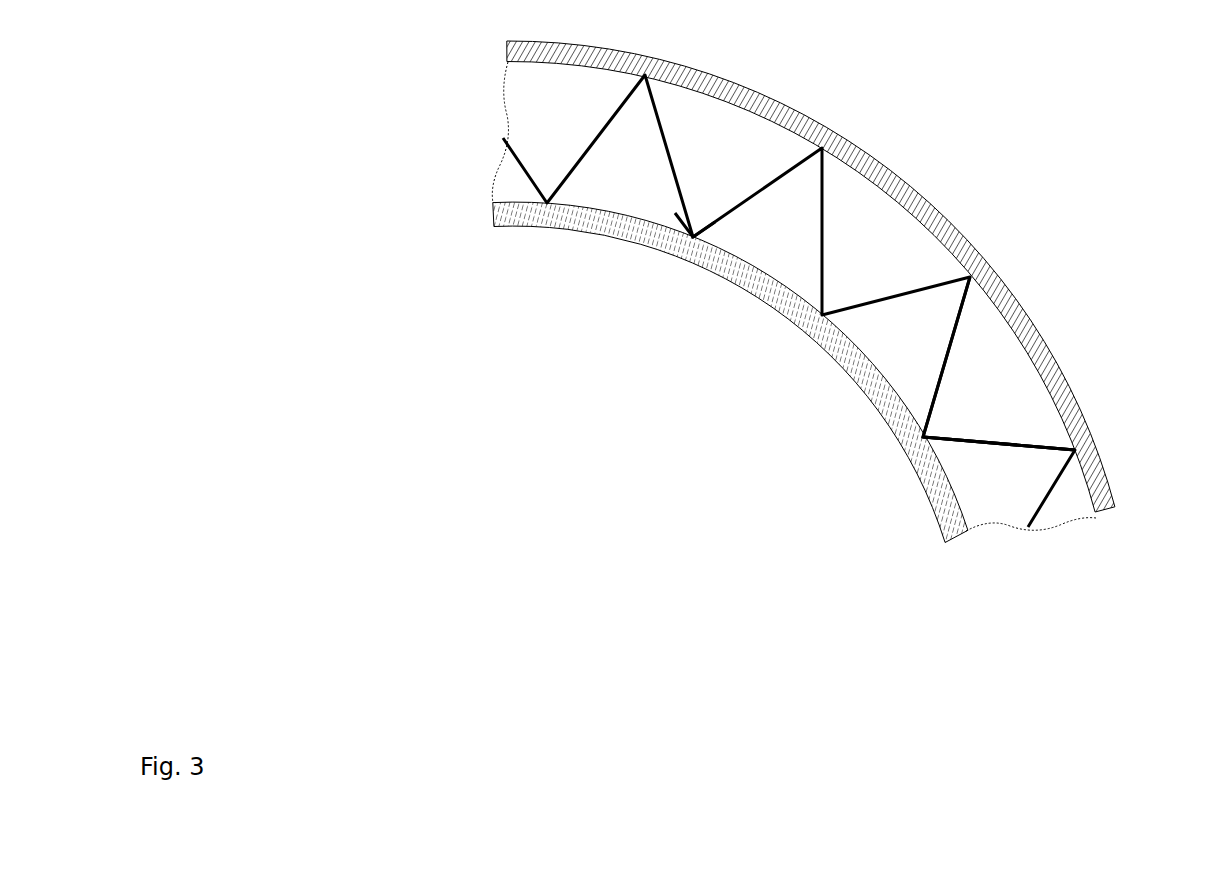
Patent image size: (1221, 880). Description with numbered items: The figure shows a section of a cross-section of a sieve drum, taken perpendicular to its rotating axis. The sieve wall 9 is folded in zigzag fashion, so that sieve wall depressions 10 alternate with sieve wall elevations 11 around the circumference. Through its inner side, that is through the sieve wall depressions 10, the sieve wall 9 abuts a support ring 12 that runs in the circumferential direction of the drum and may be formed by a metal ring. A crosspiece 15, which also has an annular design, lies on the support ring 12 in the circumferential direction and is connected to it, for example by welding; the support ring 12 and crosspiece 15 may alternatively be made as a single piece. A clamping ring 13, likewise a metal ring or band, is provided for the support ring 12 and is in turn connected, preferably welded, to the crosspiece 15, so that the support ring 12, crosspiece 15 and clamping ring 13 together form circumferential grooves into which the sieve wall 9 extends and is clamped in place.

The sieve wall 9 is at (825, 230).
The sieve wall depressions 10 is at (672, 247).
The sieve wall elevations 11 is at (1080, 446).
The support ring 12 is at (745, 293).
The clamping ring 13 is at (815, 118).
The crosspiece 15 is at (992, 388).